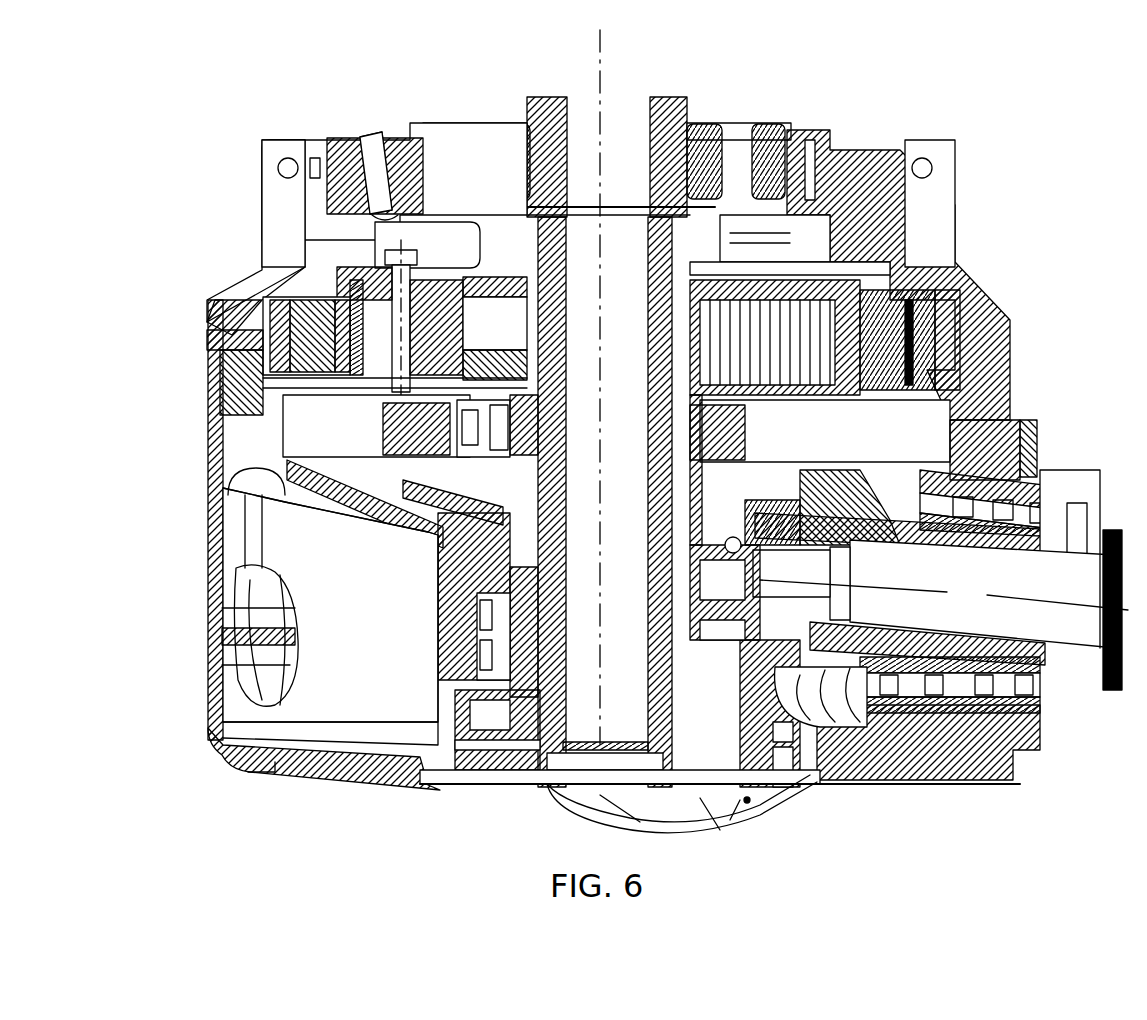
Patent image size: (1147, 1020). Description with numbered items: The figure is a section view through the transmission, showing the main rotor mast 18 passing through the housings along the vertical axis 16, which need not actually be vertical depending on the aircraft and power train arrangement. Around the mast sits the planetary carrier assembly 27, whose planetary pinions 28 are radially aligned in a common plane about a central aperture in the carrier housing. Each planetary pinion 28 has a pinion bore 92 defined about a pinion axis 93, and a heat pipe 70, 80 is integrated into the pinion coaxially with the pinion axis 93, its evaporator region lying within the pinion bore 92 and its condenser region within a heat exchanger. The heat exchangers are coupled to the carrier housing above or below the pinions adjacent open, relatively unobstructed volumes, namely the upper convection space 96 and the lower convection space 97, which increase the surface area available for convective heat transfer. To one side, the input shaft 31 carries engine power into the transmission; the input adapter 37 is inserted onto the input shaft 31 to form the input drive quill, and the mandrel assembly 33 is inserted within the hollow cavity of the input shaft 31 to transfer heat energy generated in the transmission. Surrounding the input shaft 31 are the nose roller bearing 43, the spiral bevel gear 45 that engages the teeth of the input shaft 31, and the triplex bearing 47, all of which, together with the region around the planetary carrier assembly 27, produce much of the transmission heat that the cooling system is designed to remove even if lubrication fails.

The vertical axis 16 is at (603, 92).
The main rotor mast 18 is at (540, 765).
The planetary carrier assembly 27 is at (808, 245).
The planetary pinions 28 is at (262, 322).
The input shaft 31 is at (1072, 548).
The mandrel assembly 33 is at (940, 594).
The input adapter 37 is at (1105, 668).
The nose roller bearing 43 is at (770, 508).
The spiral bevel gear 45 is at (850, 505).
The triplex bearing 47 is at (1032, 484).
The heat pipe 70 is at (375, 213).
The heat pipe 80 is at (375, 213).
The pinion bore 92 is at (382, 272).
The pinion axis 93 is at (400, 250).
The upper convection space 96 is at (427, 245).
The lower convection space 97 is at (395, 417).